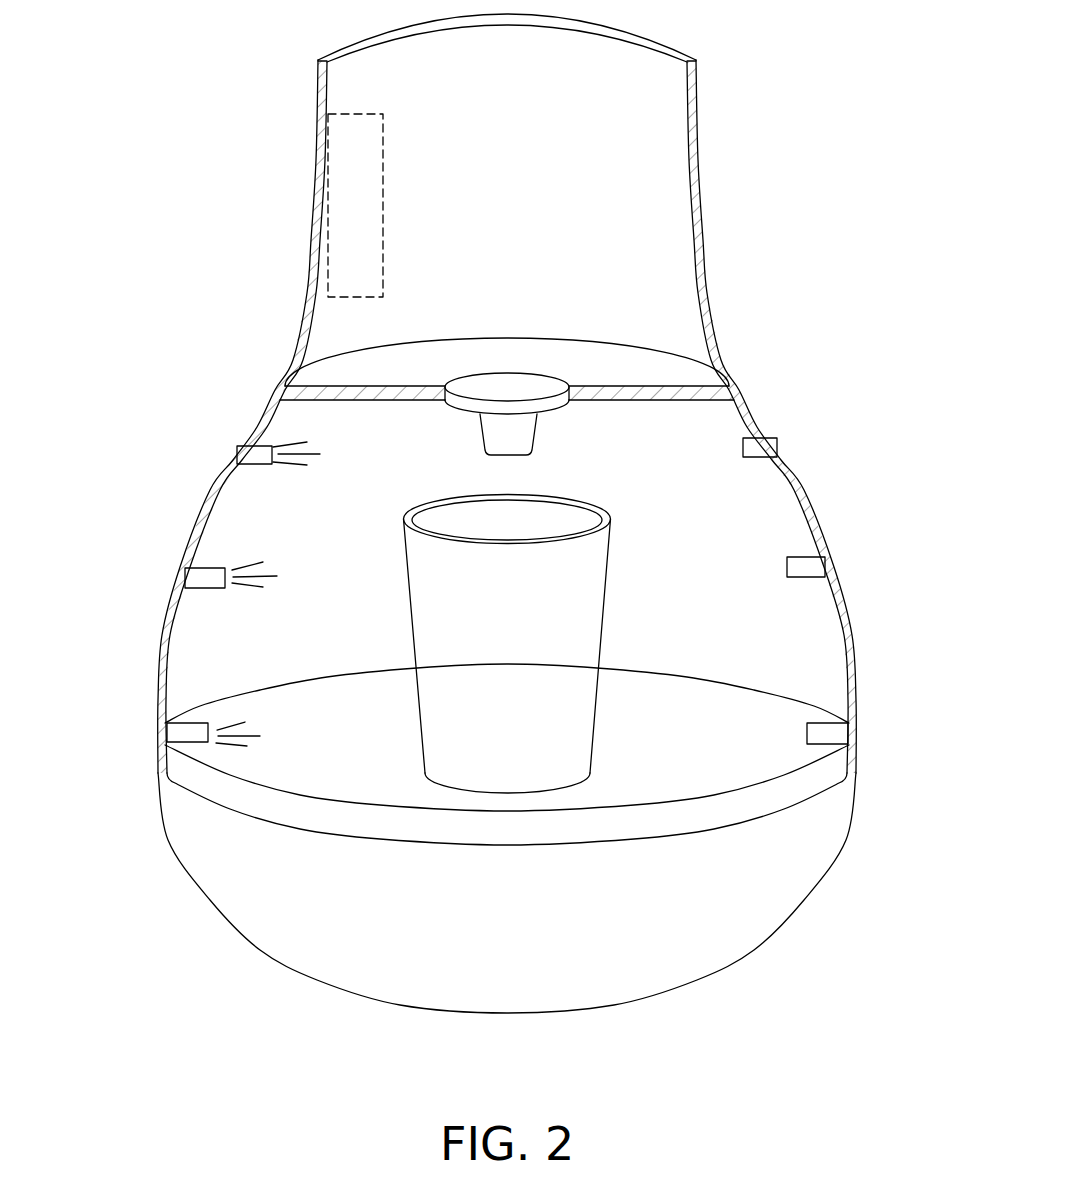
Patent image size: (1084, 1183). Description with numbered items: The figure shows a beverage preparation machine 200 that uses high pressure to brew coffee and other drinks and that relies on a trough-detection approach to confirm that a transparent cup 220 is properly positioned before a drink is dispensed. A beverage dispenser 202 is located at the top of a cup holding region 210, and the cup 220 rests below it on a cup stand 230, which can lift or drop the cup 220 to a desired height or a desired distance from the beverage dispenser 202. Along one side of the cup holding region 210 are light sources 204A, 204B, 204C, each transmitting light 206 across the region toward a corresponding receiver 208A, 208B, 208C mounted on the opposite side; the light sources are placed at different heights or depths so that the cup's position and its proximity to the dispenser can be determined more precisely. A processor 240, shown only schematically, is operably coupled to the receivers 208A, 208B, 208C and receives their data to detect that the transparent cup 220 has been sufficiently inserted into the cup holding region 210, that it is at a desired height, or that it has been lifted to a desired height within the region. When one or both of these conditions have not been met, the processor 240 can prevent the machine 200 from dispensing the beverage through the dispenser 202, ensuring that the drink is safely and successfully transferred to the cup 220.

The beverage preparation machine 200 is at (700, 235).
The beverage dispenser 202 is at (531, 386).
The light source 204A is at (248, 455).
The light source 204B is at (202, 578).
The light source 204C is at (190, 738).
The light 206 is at (288, 445).
The receiver 208A is at (762, 447).
The receiver 208B is at (810, 566).
The receiver 208C is at (832, 737).
The cup holding region 210 is at (307, 619).
The transparent cup 220 is at (517, 698).
The cup stand 230 is at (697, 817).
The processor 240 is at (348, 210).